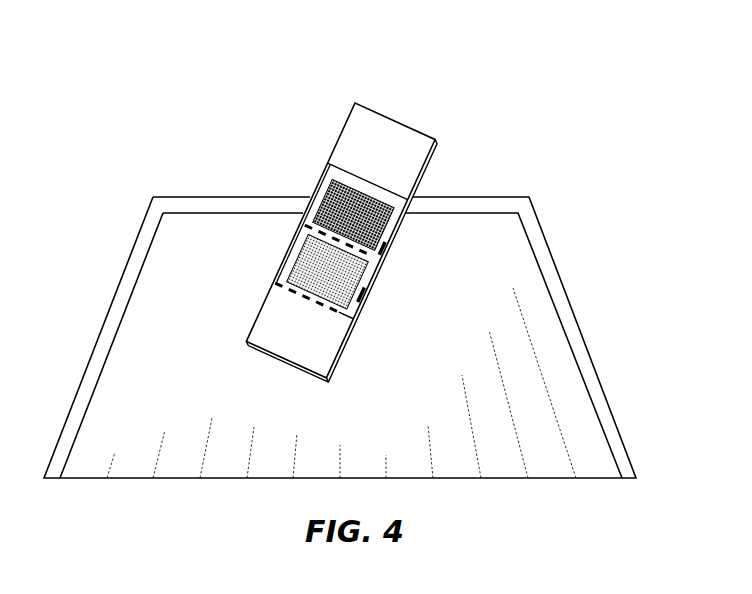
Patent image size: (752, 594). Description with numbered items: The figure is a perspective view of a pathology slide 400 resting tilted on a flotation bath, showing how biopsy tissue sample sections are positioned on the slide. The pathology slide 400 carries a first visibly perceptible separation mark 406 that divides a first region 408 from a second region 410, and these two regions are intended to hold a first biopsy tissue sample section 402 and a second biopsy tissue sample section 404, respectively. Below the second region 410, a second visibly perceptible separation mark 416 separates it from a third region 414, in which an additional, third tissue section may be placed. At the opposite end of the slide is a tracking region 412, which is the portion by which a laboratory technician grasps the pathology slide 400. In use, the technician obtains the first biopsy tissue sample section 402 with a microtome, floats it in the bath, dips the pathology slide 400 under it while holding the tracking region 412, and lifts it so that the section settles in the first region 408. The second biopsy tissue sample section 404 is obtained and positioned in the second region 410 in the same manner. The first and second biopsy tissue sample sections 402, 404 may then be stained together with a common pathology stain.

The pathology slide 400 is at (150, 104).
The first biopsy tissue sample section 402 is at (390, 233).
The second biopsy tissue sample section 404 is at (350, 289).
The first visibly perceptible separation mark 406 is at (373, 256).
The first region 408 is at (110, 285).
The second region 410 is at (290, 253).
The tracking region 412 is at (401, 160).
The third region 414 is at (263, 330).
The second visibly perceptible separation mark 416 is at (352, 318).